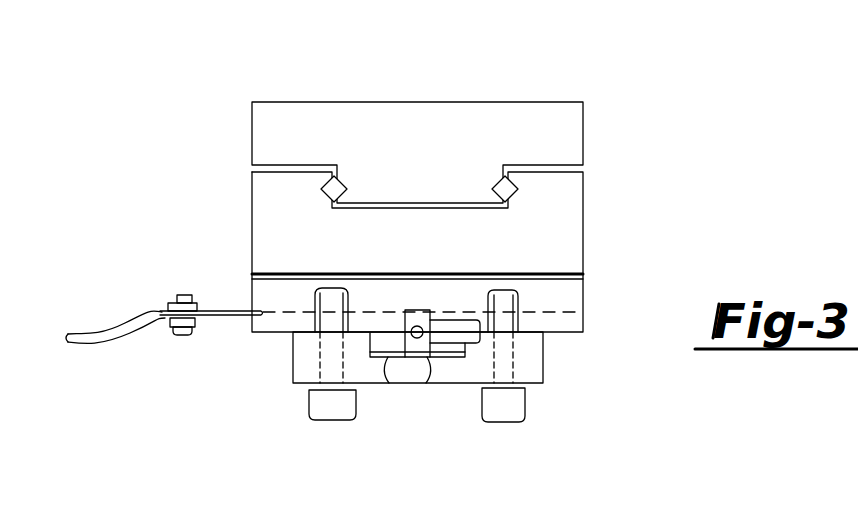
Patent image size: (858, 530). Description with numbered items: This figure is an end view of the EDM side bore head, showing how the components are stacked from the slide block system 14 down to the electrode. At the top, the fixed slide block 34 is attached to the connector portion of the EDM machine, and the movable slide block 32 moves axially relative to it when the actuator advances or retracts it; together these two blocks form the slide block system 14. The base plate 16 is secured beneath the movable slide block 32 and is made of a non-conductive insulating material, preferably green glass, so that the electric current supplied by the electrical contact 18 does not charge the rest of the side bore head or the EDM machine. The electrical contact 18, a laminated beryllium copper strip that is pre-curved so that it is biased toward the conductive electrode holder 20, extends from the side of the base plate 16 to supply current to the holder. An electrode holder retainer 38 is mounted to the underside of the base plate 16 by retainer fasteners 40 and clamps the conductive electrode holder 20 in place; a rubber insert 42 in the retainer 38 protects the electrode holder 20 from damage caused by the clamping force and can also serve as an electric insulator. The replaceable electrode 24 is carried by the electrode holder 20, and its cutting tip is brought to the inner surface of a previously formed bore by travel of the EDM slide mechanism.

The slide block system 14 is at (460, 197).
The fixed slide block 34 is at (568, 148).
The movable slide block 32 is at (568, 230).
The base plate 16 is at (570, 295).
The electrical contact 18 is at (223, 317).
The electrode holder retainer 38 is at (532, 360).
The retainer fasteners 40 is at (518, 402).
The rubber insert 42 is at (390, 362).
The conductive electrode holder 20 is at (422, 345).
The replaceable electrode 24 is at (470, 345).